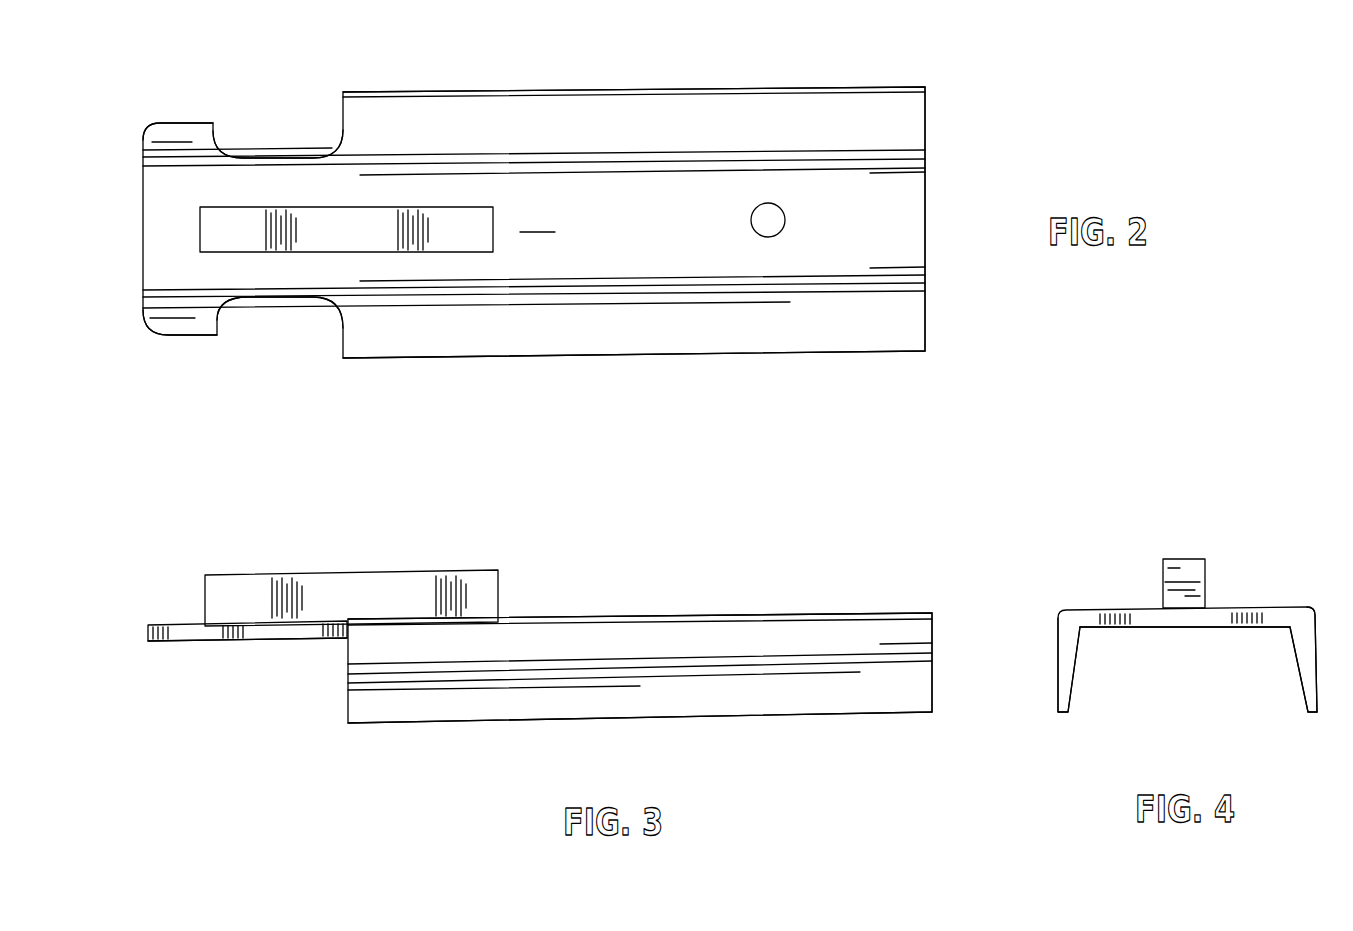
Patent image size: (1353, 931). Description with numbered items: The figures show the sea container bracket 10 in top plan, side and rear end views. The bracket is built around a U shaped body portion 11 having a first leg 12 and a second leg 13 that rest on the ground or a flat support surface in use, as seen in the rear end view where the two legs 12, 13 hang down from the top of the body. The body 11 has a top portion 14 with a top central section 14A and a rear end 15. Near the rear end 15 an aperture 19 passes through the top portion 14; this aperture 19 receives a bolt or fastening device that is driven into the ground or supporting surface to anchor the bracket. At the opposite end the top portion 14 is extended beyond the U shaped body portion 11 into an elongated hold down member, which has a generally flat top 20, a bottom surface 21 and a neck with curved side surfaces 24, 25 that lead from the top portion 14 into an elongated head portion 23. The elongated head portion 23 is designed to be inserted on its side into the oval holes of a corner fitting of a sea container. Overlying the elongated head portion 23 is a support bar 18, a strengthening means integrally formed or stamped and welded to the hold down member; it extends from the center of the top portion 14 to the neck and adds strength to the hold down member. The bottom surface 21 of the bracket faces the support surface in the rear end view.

In FIG. 2, the cable lug holder 10 is at (583, 398).
In FIG. 3, the cable lug holder 10 is at (754, 564).
In FIG. 4, the cable lug holder 10 is at (1258, 485).
In FIG. 2, the U shaped body portion 11 is at (730, 322).
In FIG. 3, the first leg 12 is at (933, 708).
In FIG. 4, the first leg 12 is at (1068, 703).
In FIG. 4, the second leg 13 is at (1303, 703).
In FIG. 2, the top portion 14 is at (693, 98).
In FIG. 3, the top portion 14 is at (823, 614).
In FIG. 2, the top central section 14A is at (537, 221).
In FIG. 2, the rear end 15 is at (893, 375).
In FIG. 3, the rear end 15 is at (908, 599).
In FIG. 4, the rear end 15 is at (1323, 616).
In FIG. 2, the support bar 18 is at (463, 213).
In FIG. 3, the support bar 18 is at (365, 571).
In FIG. 4, the support bar 18 is at (1182, 559).
In FIG. 2, the aperture 19 is at (768, 220).
In FIG. 2, the flat top 20 is at (182, 135).
In FIG. 4, the bottom surface 21 is at (1163, 627).
In FIG. 2, the elongated head portion 23 is at (139, 256).
In FIG. 3, the elongated head portion 23 is at (198, 651).
In FIG. 2, the curved side surface 24 is at (265, 157).
In FIG. 2, the curved side surface 25 is at (272, 297).
In FIG. 3, the curved side surface 25 is at (285, 640).